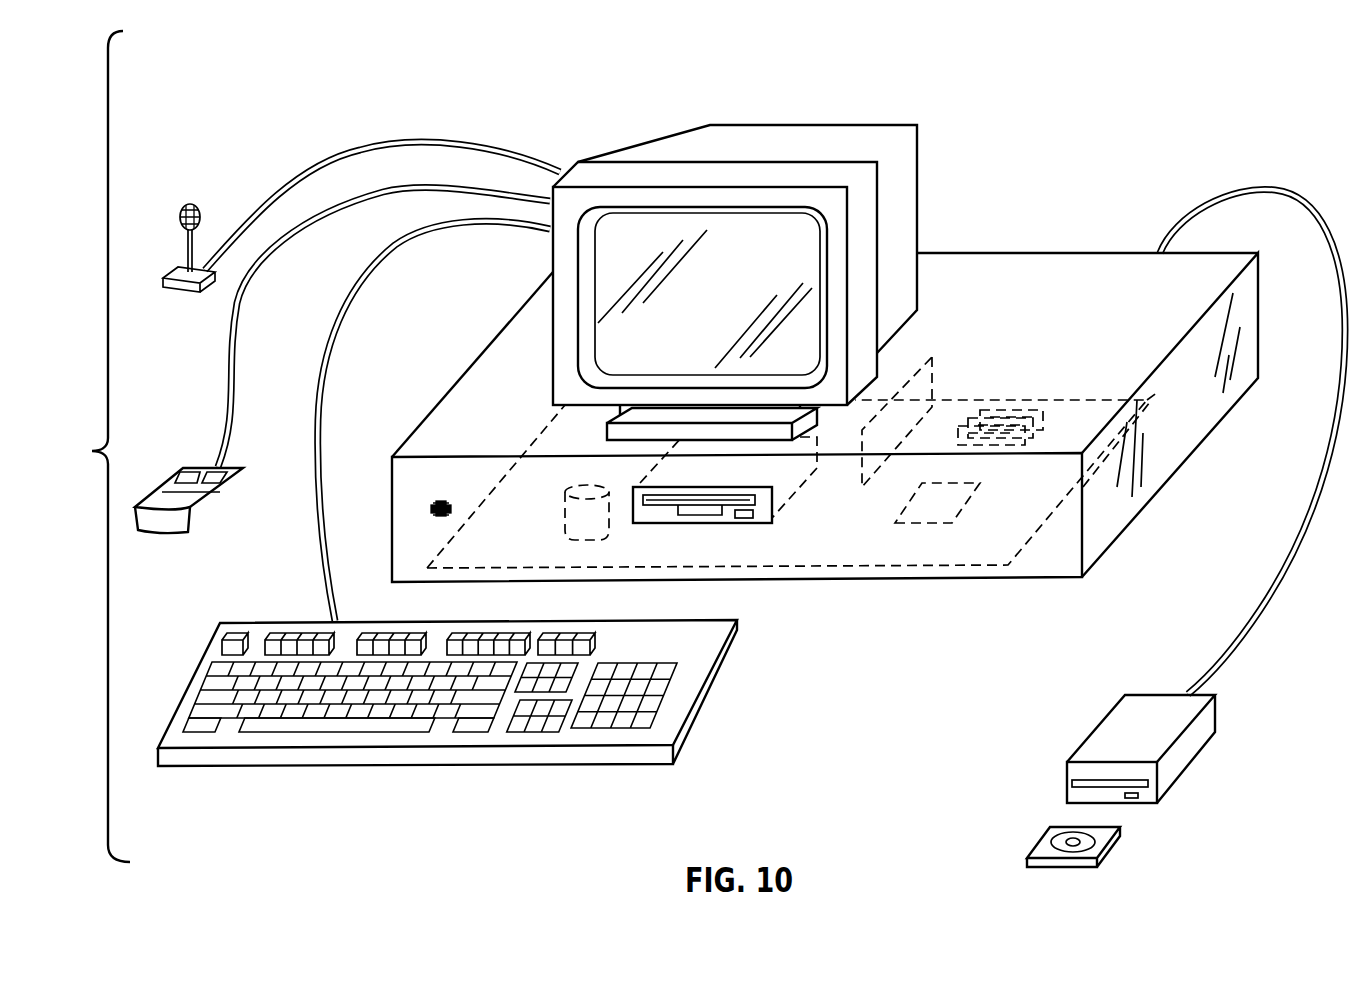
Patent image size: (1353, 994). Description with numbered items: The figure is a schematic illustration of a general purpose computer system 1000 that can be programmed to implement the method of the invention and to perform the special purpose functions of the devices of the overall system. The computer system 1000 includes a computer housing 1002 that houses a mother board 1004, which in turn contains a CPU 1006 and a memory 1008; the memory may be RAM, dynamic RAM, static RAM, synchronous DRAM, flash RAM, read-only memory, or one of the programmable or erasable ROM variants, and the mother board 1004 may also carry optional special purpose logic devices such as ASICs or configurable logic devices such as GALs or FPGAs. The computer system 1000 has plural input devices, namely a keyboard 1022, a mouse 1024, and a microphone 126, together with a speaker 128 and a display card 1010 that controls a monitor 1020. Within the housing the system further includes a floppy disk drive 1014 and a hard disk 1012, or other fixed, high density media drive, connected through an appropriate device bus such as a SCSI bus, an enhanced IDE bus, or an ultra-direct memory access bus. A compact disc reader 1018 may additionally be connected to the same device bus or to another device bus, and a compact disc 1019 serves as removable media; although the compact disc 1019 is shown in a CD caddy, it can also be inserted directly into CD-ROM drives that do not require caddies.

The computer system 1000 is at (84, 446).
The computer housing 1002 is at (1262, 306).
The mother board 1004 is at (1047, 400).
The CPU 1006 is at (927, 523).
The memory 1008 is at (932, 375).
The display card 1010 is at (983, 410).
The hard disk 1012 is at (587, 543).
The floppy disk drive 1014 is at (747, 523).
The compact disc reader 1018 is at (1110, 710).
The compact disc 1019 is at (1093, 840).
The monitor 1020 is at (823, 125).
The keyboard 1022 is at (730, 680).
The mouse 1024 is at (222, 493).
The microphone 126 is at (183, 295).
The speaker 128 is at (437, 503).